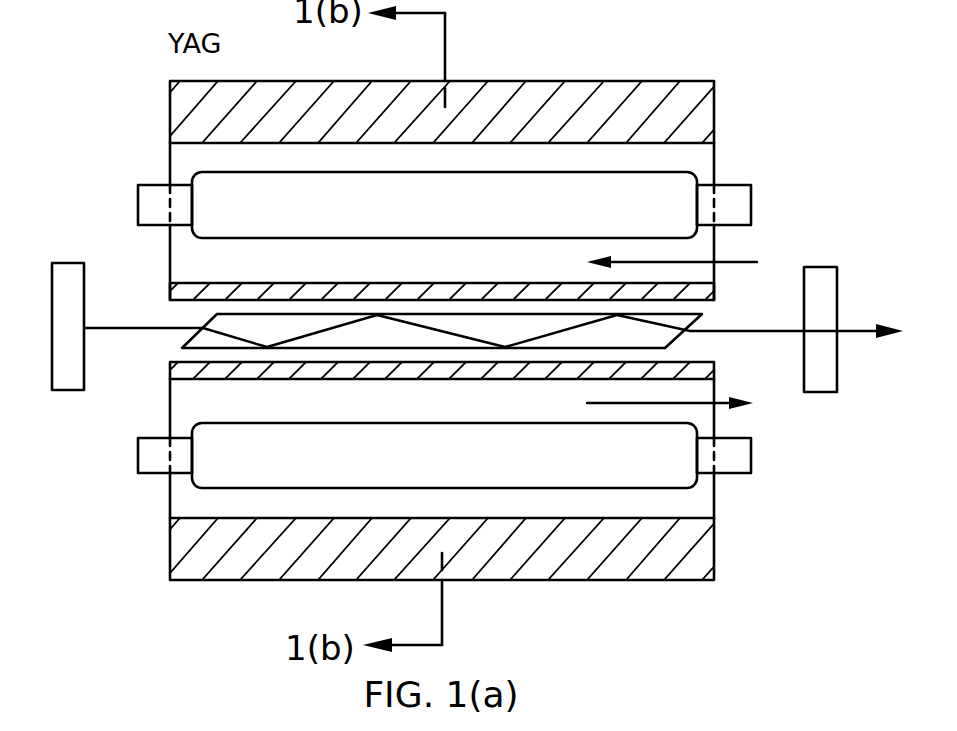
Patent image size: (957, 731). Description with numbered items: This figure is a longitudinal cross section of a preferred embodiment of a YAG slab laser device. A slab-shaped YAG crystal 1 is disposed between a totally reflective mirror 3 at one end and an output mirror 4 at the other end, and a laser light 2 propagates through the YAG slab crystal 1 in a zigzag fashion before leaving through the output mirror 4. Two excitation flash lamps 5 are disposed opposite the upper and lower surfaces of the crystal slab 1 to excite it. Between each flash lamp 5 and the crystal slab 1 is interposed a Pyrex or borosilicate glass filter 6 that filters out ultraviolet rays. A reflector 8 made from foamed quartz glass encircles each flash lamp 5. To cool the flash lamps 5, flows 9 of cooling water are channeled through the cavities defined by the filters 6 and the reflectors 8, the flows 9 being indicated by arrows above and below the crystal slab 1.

The YAG slab crystal 1 is at (200, 337).
The laser light 2 is at (772, 334).
The totally reflective mirror 3 is at (68, 273).
The output mirror 4 is at (818, 277).
The excitation flash lamp 5 is at (680, 183).
The borosilicate glass filter 6 is at (180, 290).
The reflector 8 is at (637, 100).
The cooling water flow 9 is at (737, 263).